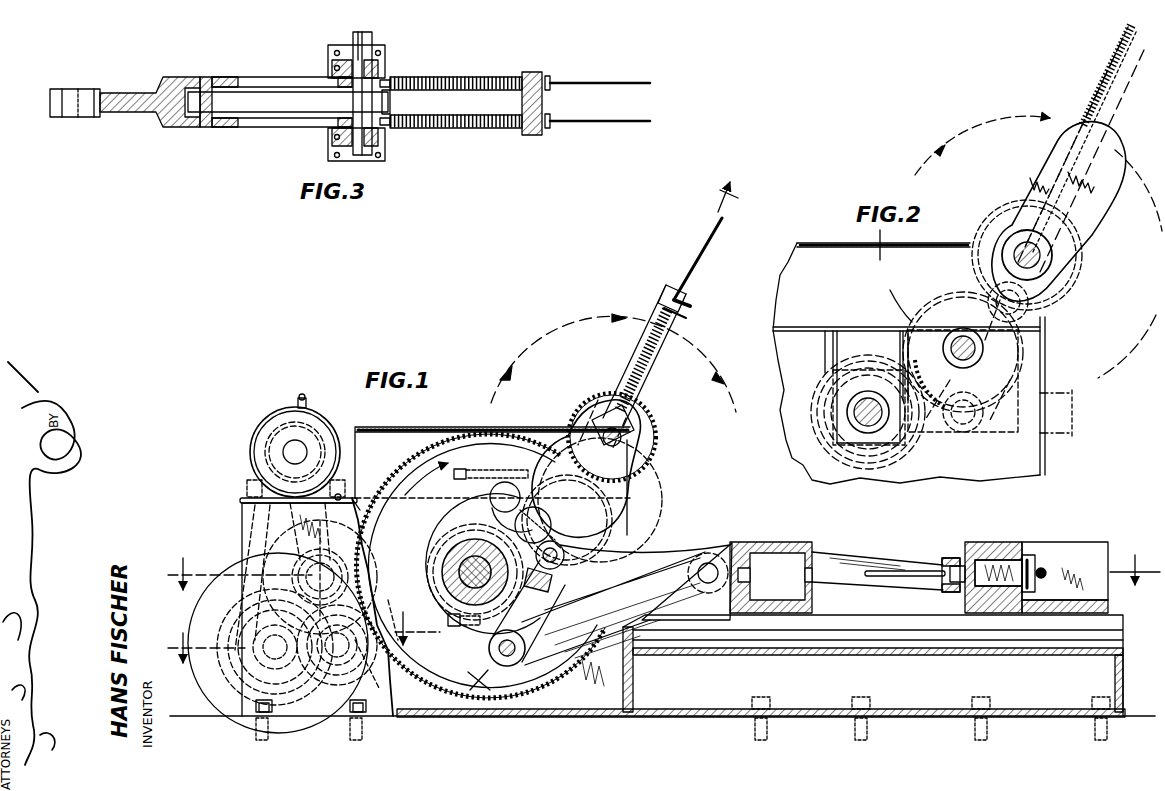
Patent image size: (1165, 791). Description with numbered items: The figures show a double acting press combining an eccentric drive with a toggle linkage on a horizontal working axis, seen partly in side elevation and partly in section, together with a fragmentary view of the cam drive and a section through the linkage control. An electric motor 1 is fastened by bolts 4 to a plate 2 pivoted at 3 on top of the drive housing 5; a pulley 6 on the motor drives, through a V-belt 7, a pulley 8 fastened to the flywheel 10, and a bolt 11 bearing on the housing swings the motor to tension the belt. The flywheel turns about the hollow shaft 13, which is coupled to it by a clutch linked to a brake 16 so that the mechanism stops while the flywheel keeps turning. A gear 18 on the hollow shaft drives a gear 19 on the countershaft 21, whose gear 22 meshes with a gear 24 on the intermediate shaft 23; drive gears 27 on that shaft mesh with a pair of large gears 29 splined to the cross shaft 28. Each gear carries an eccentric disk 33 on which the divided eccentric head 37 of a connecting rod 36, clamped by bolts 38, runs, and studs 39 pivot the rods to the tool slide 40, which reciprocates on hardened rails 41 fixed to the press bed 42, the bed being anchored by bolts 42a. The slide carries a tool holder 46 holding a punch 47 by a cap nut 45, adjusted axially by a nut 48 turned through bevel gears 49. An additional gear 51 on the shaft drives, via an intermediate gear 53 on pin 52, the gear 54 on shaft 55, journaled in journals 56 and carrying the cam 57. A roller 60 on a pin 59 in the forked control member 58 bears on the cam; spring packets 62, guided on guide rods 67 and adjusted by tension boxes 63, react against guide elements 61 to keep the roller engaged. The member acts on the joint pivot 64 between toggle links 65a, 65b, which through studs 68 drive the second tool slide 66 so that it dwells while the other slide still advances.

In FIG. 1, the electric motor 1 is at (262, 430).
In FIG. 1, the plate 2 is at (250, 494).
In FIG. 1, the pivot 3 is at (334, 490).
In FIG. 1, the screws or bolts 4 is at (663, 549).
In FIG. 2, the drive housing 5 is at (1045, 458).
In FIG. 1, the drive housing 5 is at (582, 706).
In FIG. 1, the pulley 6 is at (283, 448).
In FIG. 1, the V-belt 7 is at (242, 548).
In FIG. 1, the pulley 8 is at (232, 667).
In FIG. 1, the flywheel 10 is at (205, 696).
In FIG. 1, the bolt or screw 11 is at (240, 500).
In FIG. 1, the hollow shaft 13 is at (277, 703).
In FIG. 1, the brake 16 is at (245, 680).
In FIG. 1, the gear 18 is at (332, 680).
In FIG. 1, the gear 19 is at (367, 700).
In FIG. 1, the countershaft 21 is at (399, 620).
In FIG. 1, the gear 22 is at (356, 665).
In FIG. 1, the intermediate shaft 23 is at (345, 586).
In FIG. 1, the gear 24 is at (374, 562).
In FIG. 1, the drive gears 27 is at (318, 562).
In FIG. 2, the cross shaft 28 is at (862, 420).
In FIG. 1, the cross shaft 28 is at (476, 560).
In FIG. 1, the gears 29 is at (400, 482).
In FIG. 1, the eccentric disk 33 is at (508, 482).
In FIG. 1, the connecting rod 36 is at (848, 560).
In FIG. 1, the divided eccentric head 37 is at (425, 520).
In FIG. 1, the bolts 38 is at (460, 468).
In FIG. 1, the studs 39 is at (1002, 560).
In FIG. 1, the tool slide 40 is at (982, 542).
In FIG. 1, the hardened rails 41 is at (1110, 613).
In FIG. 1, the press bed 42 is at (1112, 640).
In FIG. 1, the anchoring bolts or screws 42a is at (350, 740).
In FIG. 1, the cap nut 45 is at (948, 590).
In FIG. 1, the tool holder 46 is at (948, 558).
In FIG. 1, the punch 47 is at (888, 576).
In FIG. 1, the nut 48 is at (1030, 556).
In FIG. 1, the bevel gears 49 is at (1043, 569).
In FIG. 2, the gear 51 is at (826, 395).
In FIG. 1, the gear 51 is at (430, 604).
In FIG. 2, the pin 52 is at (962, 340).
In FIG. 1, the pin 52 is at (563, 520).
In FIG. 2, the intermediate gear 53 is at (940, 312).
In FIG. 1, the intermediate gear 53 is at (606, 542).
In FIG. 2, the gear 54 is at (978, 275).
In FIG. 1, the gear 54 is at (645, 458).
In FIG. 3, the shaft 55 is at (362, 40).
In FIG. 2, the shaft 55 is at (1030, 246).
In FIG. 1, the shaft 55 is at (627, 437).
In FIG. 3, the journals 56 is at (384, 66).
In FIG. 3, the cam 57 is at (280, 112).
In FIG. 2, the cam 57 is at (1106, 205).
In FIG. 1, the cam 57 is at (620, 497).
In FIG. 3, the forked control member 58 is at (232, 128).
In FIG. 1, the forked control member 58 is at (618, 396).
In FIG. 3, the pin 59 is at (206, 128).
In FIG. 1, the pin 59 is at (560, 565).
In FIG. 3, the roller 60 is at (190, 110).
In FIG. 1, the roller 60 is at (548, 578).
In FIG. 3, the guide elements 61 is at (338, 82).
In FIG. 1, the guide elements 61 is at (612, 418).
In FIG. 3, the spring packets 62 is at (478, 77).
In FIG. 2, the spring packets 62 is at (1098, 78).
In FIG. 1, the spring packets 62 is at (650, 350).
In FIG. 3, the tension boxes 63 is at (540, 80).
In FIG. 1, the tension boxes 63 is at (686, 306).
In FIG. 1, the joint pivot 64 is at (507, 658).
In FIG. 1, the toggle links 65a is at (490, 640).
In FIG. 1, the toggle link 65b is at (600, 632).
In FIG. 1, the tool slide 66 is at (778, 544).
In FIG. 3, the guide rods 67 is at (590, 86).
In FIG. 1, the guide rods 67 is at (712, 238).
In FIG. 1, the studs 68 is at (709, 565).